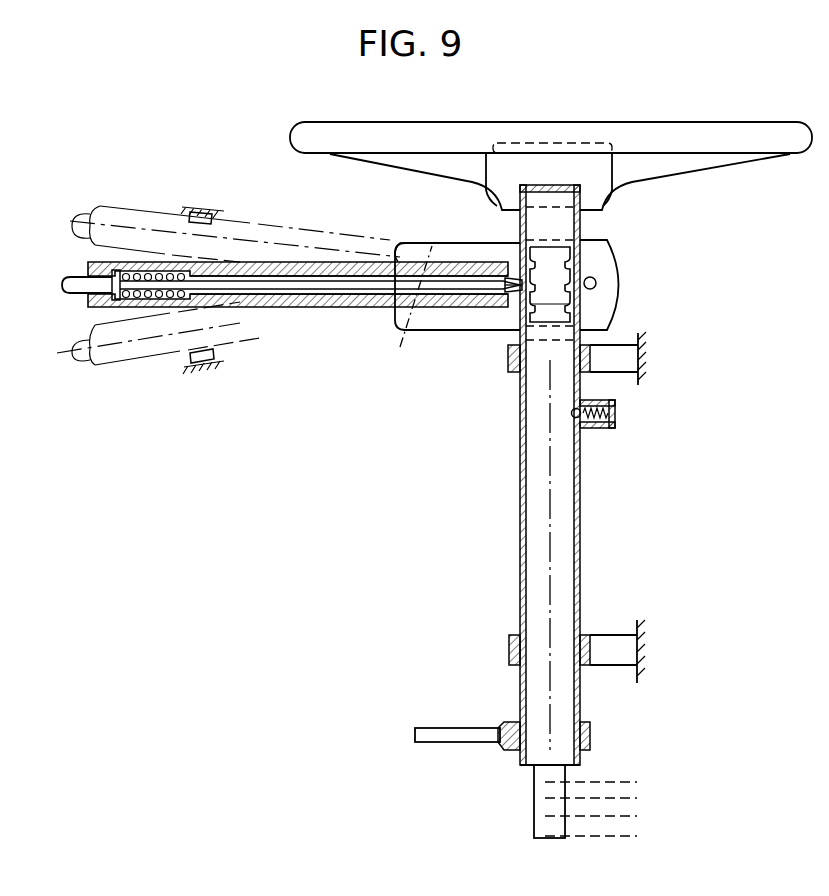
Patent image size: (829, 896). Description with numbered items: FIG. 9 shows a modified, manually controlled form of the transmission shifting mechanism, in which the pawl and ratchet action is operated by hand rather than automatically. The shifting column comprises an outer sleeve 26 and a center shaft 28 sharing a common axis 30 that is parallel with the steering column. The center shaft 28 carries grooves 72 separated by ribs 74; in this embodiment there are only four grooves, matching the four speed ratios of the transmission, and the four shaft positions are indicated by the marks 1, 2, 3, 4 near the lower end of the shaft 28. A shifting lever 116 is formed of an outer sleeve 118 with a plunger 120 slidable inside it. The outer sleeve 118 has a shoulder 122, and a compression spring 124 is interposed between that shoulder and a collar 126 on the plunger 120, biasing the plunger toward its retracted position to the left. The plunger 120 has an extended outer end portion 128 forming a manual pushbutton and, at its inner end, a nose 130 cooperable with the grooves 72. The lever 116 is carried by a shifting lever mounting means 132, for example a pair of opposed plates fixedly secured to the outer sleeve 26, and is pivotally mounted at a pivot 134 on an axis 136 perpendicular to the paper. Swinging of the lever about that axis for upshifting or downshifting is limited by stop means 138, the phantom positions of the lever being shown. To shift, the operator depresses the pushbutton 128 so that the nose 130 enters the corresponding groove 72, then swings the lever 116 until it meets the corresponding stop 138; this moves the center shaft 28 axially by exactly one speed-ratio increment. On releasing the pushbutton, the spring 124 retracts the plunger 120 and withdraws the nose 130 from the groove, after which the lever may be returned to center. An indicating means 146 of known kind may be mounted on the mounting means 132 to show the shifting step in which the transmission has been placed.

The shaft position line 1 is at (599, 836).
The shaft position line 2 is at (599, 816).
The shaft position line 3 is at (599, 798).
The shaft position line 4 is at (599, 782).
The outer sleeve 26 is at (583, 500).
The center shaft 28 is at (540, 791).
The common axis 30 is at (555, 548).
The grooves 72 is at (568, 265).
The ribs 74 is at (566, 312).
The shifting lever 116 is at (280, 263).
The outer sleeve 118 is at (331, 307).
The plunger 120 is at (276, 291).
The shoulder 122 is at (183, 262).
The compression spring 124 is at (147, 305).
The collar 126 is at (97, 268).
The outer end portion 128 is at (65, 286).
The nose 130 is at (510, 277).
The shifting lever mounting means 132 is at (477, 331).
The pivot 134 is at (403, 304).
The axis 136 is at (428, 243).
The stop means 138 is at (201, 207).
The indicating means 146 is at (604, 287).